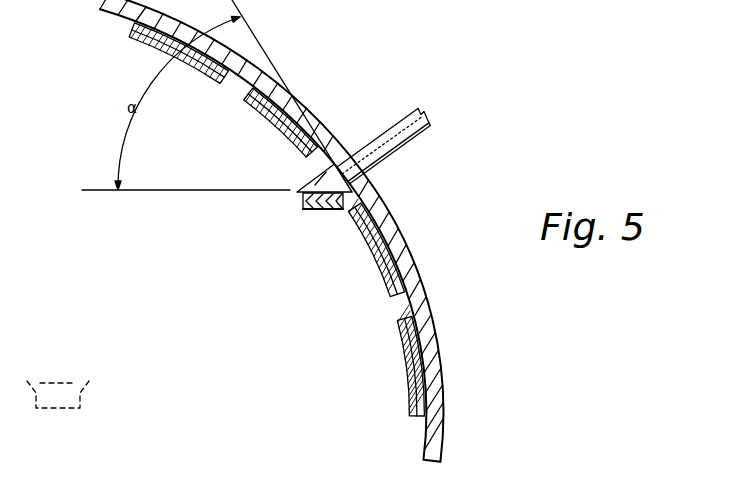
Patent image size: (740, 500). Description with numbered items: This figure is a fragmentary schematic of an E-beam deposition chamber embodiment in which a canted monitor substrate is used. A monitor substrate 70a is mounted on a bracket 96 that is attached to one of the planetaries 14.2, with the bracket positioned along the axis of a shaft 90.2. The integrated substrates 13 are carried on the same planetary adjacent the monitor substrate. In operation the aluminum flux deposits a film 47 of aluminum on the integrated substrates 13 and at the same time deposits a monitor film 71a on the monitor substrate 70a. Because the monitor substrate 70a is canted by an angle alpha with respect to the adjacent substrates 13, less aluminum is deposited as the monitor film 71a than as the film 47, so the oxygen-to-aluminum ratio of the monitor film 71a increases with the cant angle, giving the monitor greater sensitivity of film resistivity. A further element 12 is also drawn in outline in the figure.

The planetary 14.2 is at (426, 297).
The integrated substrate 13 is at (147, 38).
The film of aluminum 47 is at (209, 76).
The bracket 96 is at (330, 172).
The shaft 90.2 is at (418, 134).
The monitor substrate 70a is at (303, 198).
The monitor film 71a is at (322, 210).
The element 12 is at (82, 403).